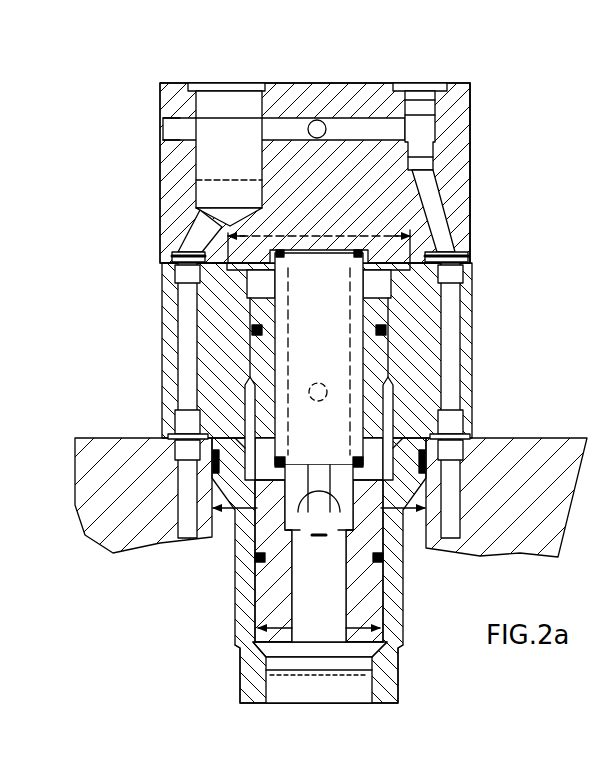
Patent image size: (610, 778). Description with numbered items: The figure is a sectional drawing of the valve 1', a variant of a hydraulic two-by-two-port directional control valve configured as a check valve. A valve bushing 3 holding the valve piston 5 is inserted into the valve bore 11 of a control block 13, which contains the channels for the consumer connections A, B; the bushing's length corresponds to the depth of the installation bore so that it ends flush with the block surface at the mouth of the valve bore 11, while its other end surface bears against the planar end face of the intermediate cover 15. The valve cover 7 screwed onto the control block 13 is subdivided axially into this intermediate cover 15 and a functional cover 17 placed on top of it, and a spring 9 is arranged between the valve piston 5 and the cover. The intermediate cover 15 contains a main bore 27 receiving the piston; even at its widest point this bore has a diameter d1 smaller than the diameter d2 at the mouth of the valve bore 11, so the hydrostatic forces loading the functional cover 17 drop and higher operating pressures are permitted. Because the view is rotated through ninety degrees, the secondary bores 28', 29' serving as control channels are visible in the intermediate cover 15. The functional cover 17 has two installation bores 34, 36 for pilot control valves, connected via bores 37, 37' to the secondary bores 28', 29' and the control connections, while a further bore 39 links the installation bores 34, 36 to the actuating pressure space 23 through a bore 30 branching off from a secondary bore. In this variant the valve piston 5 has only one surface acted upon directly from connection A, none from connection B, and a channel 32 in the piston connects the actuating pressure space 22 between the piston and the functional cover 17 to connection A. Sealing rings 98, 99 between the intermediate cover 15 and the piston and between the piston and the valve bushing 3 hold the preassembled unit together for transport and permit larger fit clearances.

The valve 1' is at (523, 173).
The valve bushing 3 is at (400, 580).
The valve piston 5 is at (387, 612).
The valve cover 7 is at (133, 200).
The spring 9 is at (257, 289).
The valve bore 11 is at (415, 531).
The control block 13 is at (513, 437).
The intermediate cover 15 is at (463, 350).
The functional cover 17 is at (463, 207).
The actuating pressure space 22 is at (373, 285).
The actuating pressure space 23 is at (250, 413).
The main bore 27 is at (392, 412).
The secondary bore 28' is at (136, 400).
The secondary bore 29' is at (491, 400).
The bore 30 is at (337, 393).
The channel 32 is at (328, 592).
The installation bore 34 is at (245, 107).
The installation bore 36 is at (423, 110).
The bore 37 is at (144, 236).
The bore 37' is at (490, 216).
The bore 39 is at (368, 130).
The sealing ring 98 is at (250, 557).
The sealing ring 99 is at (250, 330).
The diameter d1 is at (319, 236).
The diameter d2 is at (410, 498).
The consumer connection A is at (328, 680).
The consumer connection B is at (245, 628).